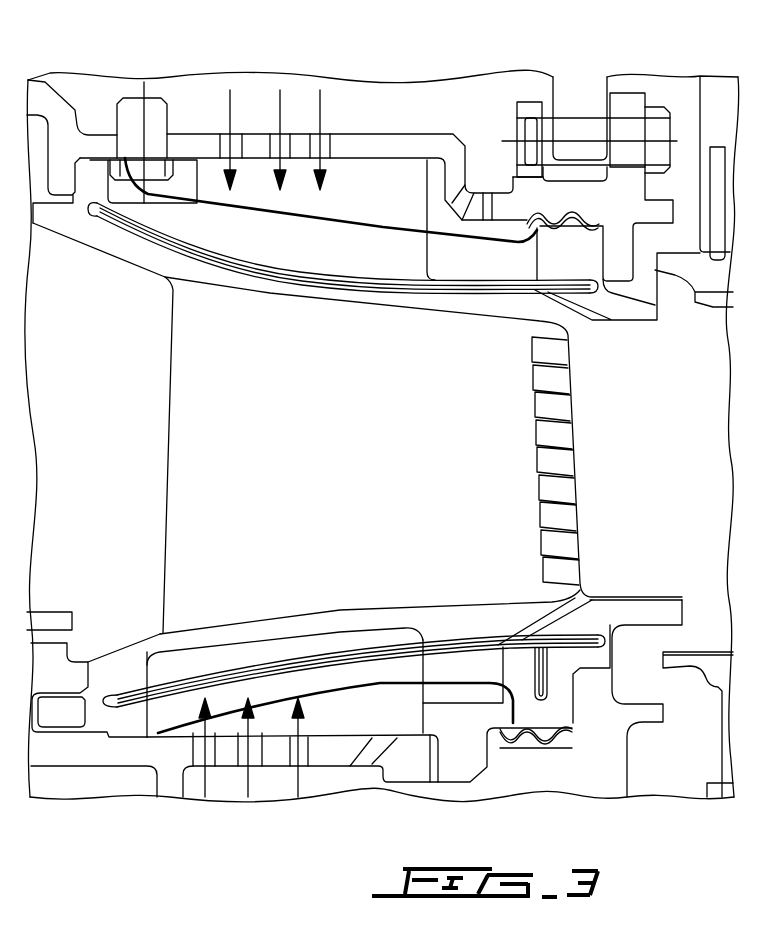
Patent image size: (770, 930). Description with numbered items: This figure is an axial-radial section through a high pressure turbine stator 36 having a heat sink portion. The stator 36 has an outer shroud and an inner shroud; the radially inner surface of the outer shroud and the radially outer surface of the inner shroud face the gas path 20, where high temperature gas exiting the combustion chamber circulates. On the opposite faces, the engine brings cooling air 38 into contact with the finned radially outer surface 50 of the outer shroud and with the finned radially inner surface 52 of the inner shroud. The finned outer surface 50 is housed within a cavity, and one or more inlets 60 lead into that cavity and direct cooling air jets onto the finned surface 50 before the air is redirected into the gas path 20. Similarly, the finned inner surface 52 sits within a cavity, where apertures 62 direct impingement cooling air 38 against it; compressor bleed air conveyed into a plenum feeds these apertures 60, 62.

The gas path 20 is at (126, 451).
The high pressure turbine stator 36 is at (585, 243).
The cooling air 38 is at (320, 123).
The finned radially outer surface 50 is at (218, 237).
The radially inner surface 52 is at (372, 673).
The inlets 60 is at (280, 134).
The apertures 62 is at (243, 748).